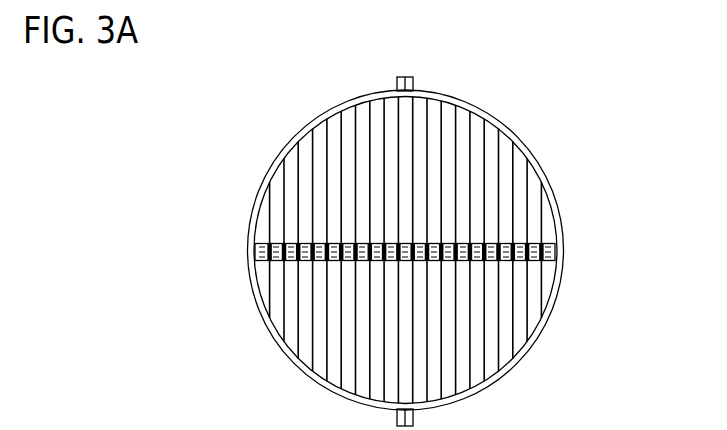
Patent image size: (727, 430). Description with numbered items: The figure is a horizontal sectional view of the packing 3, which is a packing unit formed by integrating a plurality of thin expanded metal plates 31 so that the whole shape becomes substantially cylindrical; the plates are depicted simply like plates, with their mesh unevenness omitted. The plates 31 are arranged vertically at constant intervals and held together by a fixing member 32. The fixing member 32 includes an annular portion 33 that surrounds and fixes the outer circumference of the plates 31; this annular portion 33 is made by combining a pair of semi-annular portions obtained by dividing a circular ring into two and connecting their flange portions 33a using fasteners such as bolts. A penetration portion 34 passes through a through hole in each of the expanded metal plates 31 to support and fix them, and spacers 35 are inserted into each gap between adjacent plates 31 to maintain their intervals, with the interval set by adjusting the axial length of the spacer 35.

The packing 3 is at (272, 121).
The expanded metal plate 31 is at (297, 183).
The fixing member 32 is at (531, 146).
The annular portion 33 is at (497, 119).
The flange portion 33a is at (413, 78).
The penetration portion 34 is at (255, 257).
The spacer 35 is at (555, 244).